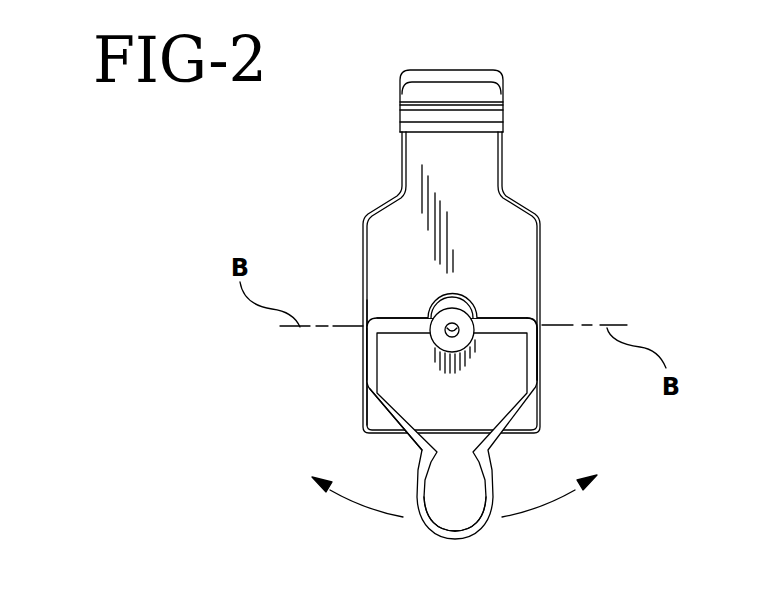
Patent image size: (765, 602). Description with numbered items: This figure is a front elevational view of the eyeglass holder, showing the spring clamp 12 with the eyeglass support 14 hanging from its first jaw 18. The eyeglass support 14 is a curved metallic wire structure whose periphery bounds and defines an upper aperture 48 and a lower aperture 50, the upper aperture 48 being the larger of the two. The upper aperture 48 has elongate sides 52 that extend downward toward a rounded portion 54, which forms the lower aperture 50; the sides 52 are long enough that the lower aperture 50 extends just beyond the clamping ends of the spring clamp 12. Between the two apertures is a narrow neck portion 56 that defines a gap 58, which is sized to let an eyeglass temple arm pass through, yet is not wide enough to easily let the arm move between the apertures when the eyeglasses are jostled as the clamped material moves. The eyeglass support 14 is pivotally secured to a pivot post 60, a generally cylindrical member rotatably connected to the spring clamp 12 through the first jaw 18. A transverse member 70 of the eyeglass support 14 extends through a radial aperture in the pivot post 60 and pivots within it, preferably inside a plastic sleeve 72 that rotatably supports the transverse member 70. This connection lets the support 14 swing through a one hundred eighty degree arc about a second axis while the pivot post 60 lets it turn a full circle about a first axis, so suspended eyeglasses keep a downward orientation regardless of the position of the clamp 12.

The spring clamp 12 is at (505, 143).
The eyeglass support 14 is at (497, 489).
The first jaw 18 is at (410, 224).
The upper aperture 48 is at (440, 402).
The lower aperture 50 is at (454, 512).
The elongate sides 52 is at (368, 347).
The rounded portion 54 is at (460, 535).
The narrow neck portion 56 is at (423, 456).
The gap 58 is at (453, 457).
The pivot post 60 is at (457, 312).
The transverse member 70 is at (537, 318).
The plastic sleeve 72 is at (375, 316).